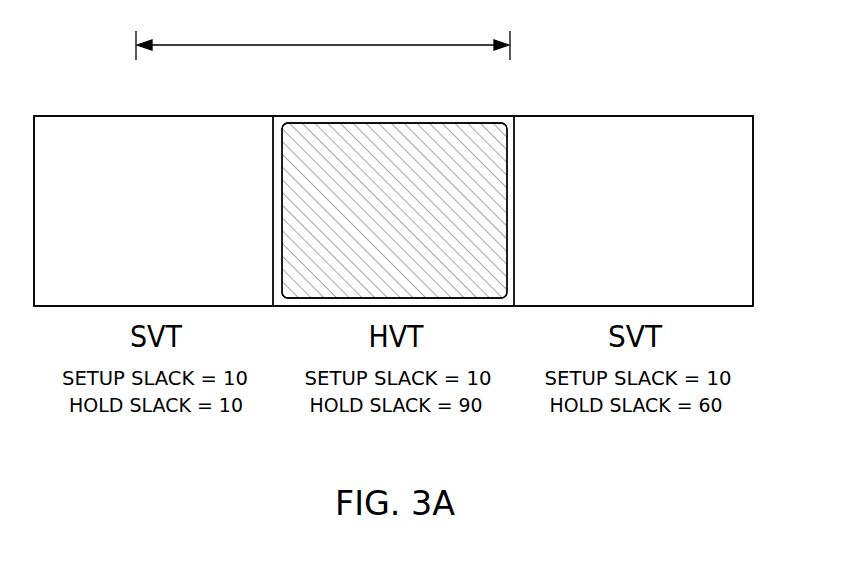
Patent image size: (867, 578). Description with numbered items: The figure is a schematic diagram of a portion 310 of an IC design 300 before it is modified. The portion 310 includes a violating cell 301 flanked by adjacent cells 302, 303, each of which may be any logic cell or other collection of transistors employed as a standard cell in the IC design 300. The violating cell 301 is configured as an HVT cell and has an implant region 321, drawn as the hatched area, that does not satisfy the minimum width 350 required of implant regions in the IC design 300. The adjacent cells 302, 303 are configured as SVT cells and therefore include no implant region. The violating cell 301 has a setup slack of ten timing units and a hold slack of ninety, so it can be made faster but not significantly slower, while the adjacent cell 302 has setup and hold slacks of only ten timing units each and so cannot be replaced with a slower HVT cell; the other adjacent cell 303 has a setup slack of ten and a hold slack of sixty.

The IC design 300 is at (48, 55).
The portion 310 is at (690, 86).
The adjacent cell 302 is at (136, 161).
The violating cell 301 is at (375, 161).
The adjacent cell 303 is at (615, 161).
The implant region 321 is at (454, 118).
The minimum width 350 is at (323, 45).